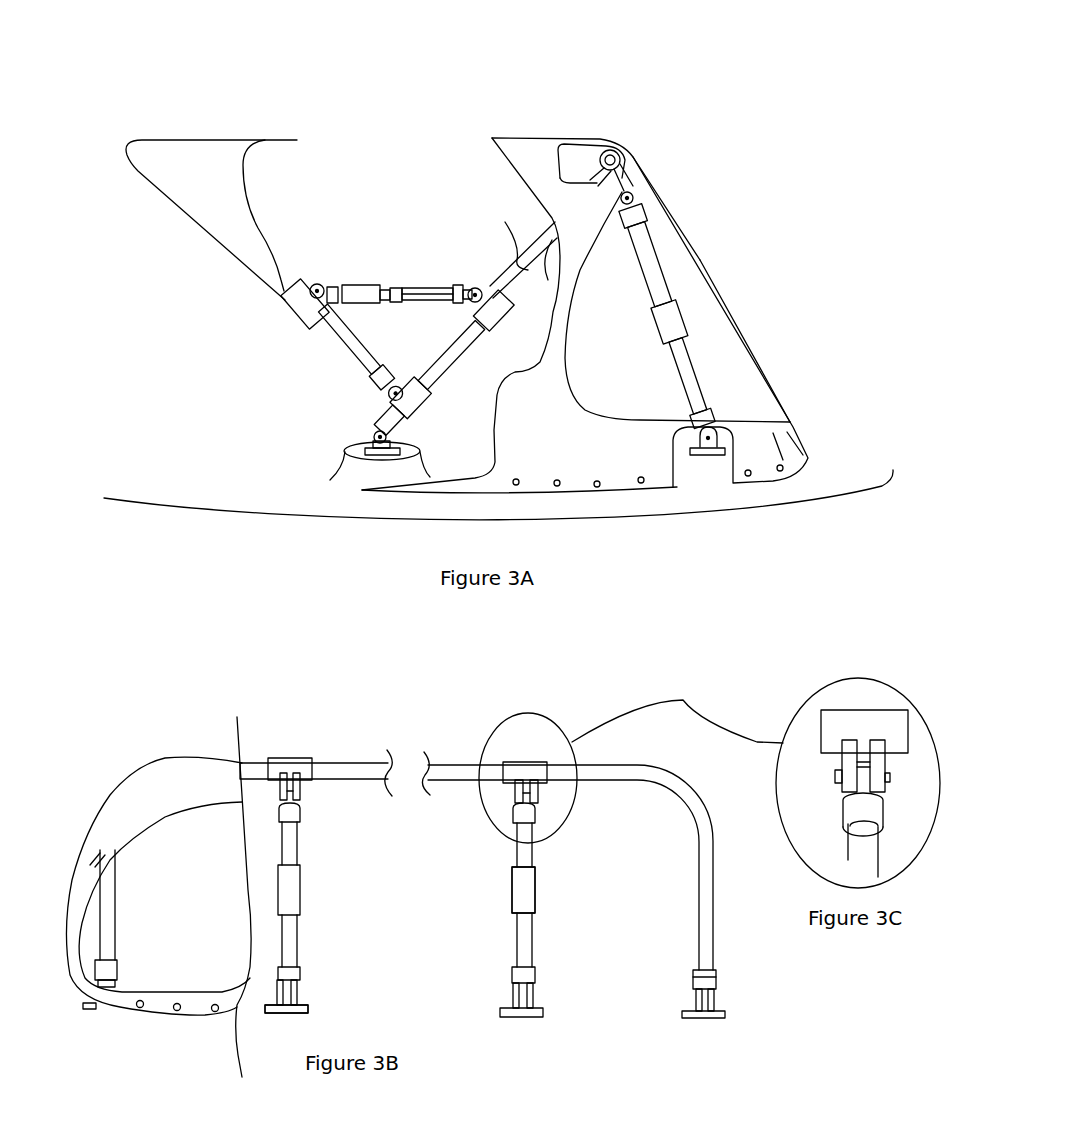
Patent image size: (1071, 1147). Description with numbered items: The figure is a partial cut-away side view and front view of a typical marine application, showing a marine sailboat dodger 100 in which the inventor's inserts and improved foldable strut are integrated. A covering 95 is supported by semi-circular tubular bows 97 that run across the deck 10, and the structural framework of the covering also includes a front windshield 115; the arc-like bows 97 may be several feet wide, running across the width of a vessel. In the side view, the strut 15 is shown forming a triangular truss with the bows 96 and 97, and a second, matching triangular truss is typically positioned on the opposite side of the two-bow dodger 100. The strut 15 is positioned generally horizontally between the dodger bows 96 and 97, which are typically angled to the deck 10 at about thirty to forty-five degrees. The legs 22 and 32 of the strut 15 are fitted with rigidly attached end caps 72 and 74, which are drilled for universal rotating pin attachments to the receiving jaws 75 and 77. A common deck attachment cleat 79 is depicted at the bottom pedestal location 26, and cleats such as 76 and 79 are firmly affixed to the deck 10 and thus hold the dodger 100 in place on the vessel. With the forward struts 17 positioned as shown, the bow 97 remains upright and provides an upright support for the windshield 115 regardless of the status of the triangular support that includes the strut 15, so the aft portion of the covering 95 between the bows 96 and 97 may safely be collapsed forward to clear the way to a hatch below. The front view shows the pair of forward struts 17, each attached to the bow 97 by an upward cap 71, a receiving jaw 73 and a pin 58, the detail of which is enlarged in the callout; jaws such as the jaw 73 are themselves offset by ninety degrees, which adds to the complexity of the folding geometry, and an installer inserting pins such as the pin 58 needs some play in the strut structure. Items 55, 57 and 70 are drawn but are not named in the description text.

In FIG. 3A, the deck 10 is at (830, 477).
In FIG. 3A, the strut 15 is at (403, 140).
In FIG. 3A, the forward strut 17 is at (700, 306).
In FIG. 3B, the forward strut 17 is at (500, 905).
In FIG. 3A, the leg 22 is at (383, 283).
In FIG. 3A, the bottom pedestal location 26 is at (360, 475).
In FIG. 3A, the leg 32 is at (423, 300).
In FIG. 3A, the pivot joint 55 is at (316, 285).
In FIG. 3A, the strut 57 is at (473, 287).
In FIG. 3C, the pin 58 is at (837, 785).
In FIG. 3B, the cylinder body 70 is at (530, 890).
In FIG. 3A, the upward cap 71 is at (640, 213).
In FIG. 3C, the upward cap 71 is at (870, 810).
In FIG. 3A, the end cap 72 is at (333, 285).
In FIG. 3A, the receiving jaw 73 is at (628, 192).
In FIG. 3C, the receiving jaw 73 is at (858, 725).
In FIG. 3A, the end cap 74 is at (457, 283).
In FIG. 3A, the receiving jaw 75 is at (313, 317).
In FIG. 3A, the cleat 76 is at (707, 457).
In FIG. 3B, the cleat 76 is at (307, 1002).
In FIG. 3A, the receiving jaw 77 is at (478, 282).
In FIG. 3A, the deck attachment cleat 79 is at (373, 440).
In FIG. 3B, the deck attachment cleat 79 is at (88, 1009).
In FIG. 3A, the covering 95 is at (537, 150).
In FIG. 3A, the bow 96 is at (363, 360).
In FIG. 3A, the tubular bow 97 is at (453, 387).
In FIG. 3B, the tubular bow 97 is at (590, 777).
In FIG. 3A, the sailboat dodger 100 is at (653, 124).
In FIG. 3B, the sailboat dodger 100 is at (189, 1043).
In FIG. 3A, the front windshield 115 is at (737, 350).